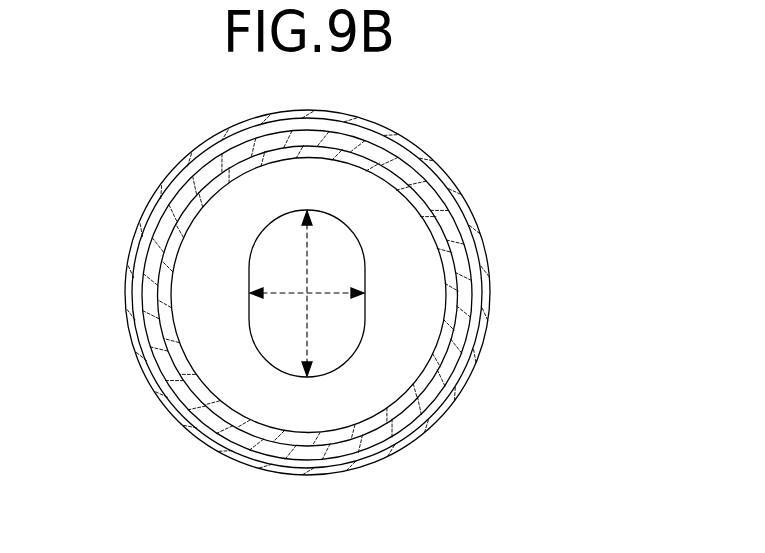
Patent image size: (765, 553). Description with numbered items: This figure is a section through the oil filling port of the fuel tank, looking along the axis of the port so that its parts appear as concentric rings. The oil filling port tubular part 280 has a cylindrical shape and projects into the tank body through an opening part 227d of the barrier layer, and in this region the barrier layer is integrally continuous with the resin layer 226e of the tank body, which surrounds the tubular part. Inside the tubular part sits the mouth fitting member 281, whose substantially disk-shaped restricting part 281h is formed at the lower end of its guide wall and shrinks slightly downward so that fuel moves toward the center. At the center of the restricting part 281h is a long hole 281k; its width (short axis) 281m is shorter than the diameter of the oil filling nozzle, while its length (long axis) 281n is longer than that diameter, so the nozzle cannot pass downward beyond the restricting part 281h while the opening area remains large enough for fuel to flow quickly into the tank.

The opening part 227d is at (485, 239).
The resin layer 226e is at (483, 271).
The oil filling port tubular part 280 is at (468, 298).
The mouth fitting member 281 is at (488, 335).
The restricting part 281h is at (373, 195).
The long hole 281k is at (363, 280).
The width (short axis) 281m is at (330, 305).
The length (long axis) 281n is at (313, 337).